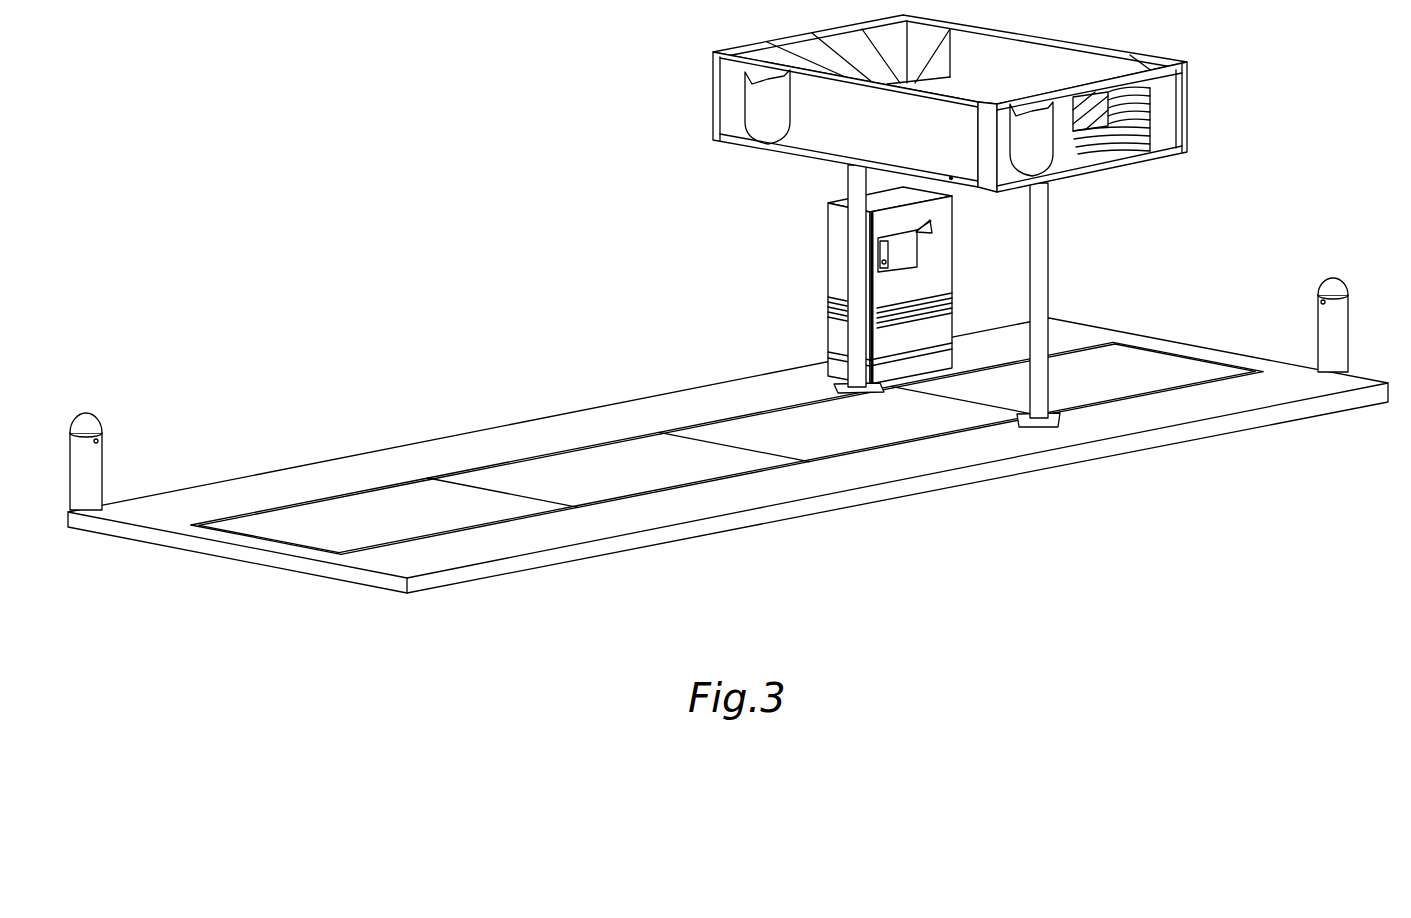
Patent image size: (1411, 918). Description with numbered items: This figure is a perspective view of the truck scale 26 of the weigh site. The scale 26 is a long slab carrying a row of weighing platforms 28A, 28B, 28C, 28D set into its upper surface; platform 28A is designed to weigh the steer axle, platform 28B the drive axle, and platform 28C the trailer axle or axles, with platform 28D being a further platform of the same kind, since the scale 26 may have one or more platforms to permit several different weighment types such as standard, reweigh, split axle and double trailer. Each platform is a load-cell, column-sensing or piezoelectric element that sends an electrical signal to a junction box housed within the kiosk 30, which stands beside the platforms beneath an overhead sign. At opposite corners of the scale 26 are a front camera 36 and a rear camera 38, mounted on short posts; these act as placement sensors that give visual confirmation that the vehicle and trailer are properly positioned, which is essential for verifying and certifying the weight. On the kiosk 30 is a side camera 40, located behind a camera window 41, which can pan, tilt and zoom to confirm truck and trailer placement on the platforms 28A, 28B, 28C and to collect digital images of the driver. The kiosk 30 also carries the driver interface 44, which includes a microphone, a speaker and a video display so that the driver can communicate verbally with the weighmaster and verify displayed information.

The scale 26 is at (566, 318).
The platform 28A is at (1128, 368).
The platform 28B is at (795, 468).
The platform 28C is at (592, 478).
The weighing platform section 28D is at (362, 523).
The kiosk 30 is at (877, 285).
The front camera 36 is at (735, 98).
The rear camera 38 is at (93, 425).
The side camera 40 is at (886, 262).
The camera window 41 is at (887, 247).
The driver interface 44 is at (916, 230).